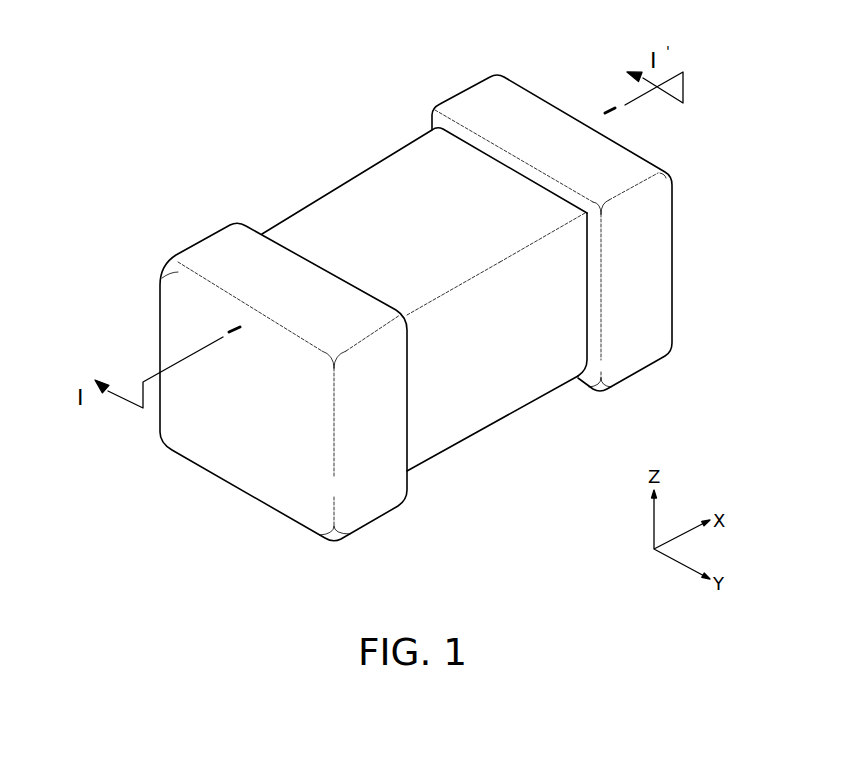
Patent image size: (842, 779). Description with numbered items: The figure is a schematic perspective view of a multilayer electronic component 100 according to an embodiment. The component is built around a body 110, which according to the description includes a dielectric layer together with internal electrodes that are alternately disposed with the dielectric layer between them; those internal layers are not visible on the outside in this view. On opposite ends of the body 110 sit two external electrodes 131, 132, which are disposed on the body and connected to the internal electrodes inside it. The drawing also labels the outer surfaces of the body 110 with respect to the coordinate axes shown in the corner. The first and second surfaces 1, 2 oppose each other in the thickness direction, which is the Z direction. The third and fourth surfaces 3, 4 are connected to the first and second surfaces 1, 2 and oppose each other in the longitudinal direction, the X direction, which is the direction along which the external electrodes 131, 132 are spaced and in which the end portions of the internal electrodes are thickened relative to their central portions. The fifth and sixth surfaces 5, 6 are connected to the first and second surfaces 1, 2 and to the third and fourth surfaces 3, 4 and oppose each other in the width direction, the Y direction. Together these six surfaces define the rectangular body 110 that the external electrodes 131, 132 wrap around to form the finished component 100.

The multilayer electronic component 100 is at (450, 278).
The body 110 is at (402, 284).
The external electrode 131 is at (283, 357).
The external electrode 132 is at (582, 208).
The first surface 1 is at (458, 400).
The second surface 2 is at (430, 185).
The third surface 3 is at (250, 443).
The fourth surface 4 is at (628, 246).
The fifth surface 5 is at (515, 365).
The sixth surface 6 is at (380, 210).